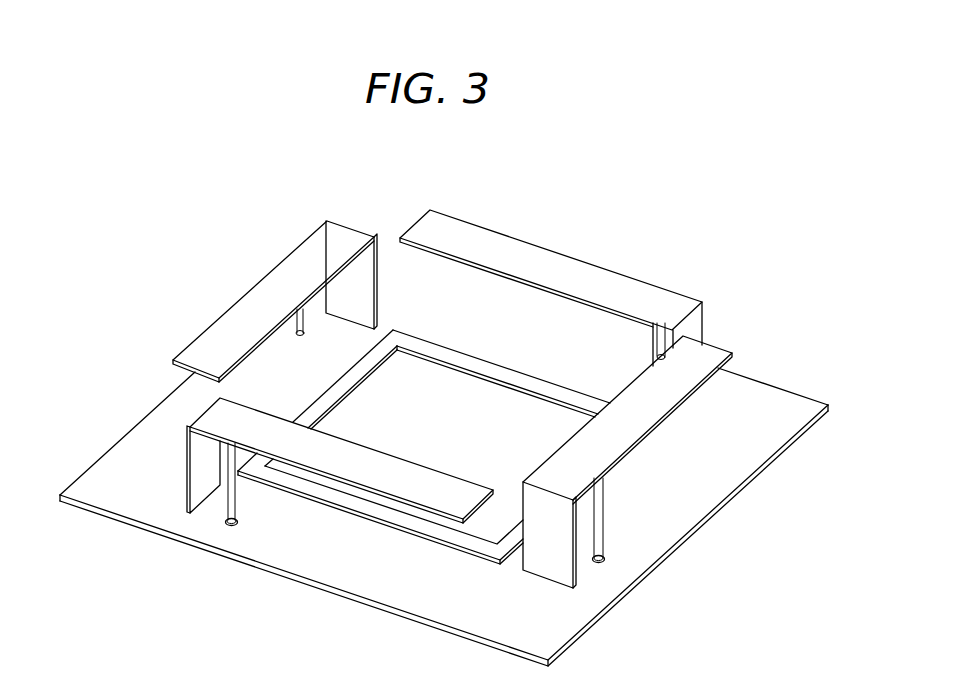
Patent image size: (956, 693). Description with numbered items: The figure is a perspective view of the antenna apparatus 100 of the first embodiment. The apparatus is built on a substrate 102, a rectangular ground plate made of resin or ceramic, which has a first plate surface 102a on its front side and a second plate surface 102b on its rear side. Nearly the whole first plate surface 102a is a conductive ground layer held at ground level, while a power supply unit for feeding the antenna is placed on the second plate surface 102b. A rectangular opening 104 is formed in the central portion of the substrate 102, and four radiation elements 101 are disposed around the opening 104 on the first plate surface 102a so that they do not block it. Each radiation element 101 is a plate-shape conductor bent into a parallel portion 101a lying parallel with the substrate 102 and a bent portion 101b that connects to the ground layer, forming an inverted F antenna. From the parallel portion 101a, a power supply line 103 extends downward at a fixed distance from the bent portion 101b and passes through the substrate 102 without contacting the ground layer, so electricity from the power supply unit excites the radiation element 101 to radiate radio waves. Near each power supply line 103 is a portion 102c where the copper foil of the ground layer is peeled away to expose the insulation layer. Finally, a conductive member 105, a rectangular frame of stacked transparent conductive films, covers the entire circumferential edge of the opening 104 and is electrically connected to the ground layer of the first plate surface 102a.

The antenna apparatus 100 is at (170, 202).
The radiation element 101 is at (187, 293).
The parallel portion 101a is at (300, 247).
The bent portion 101b is at (374, 262).
The substrate 102 is at (810, 399).
The first plate surface 102a is at (343, 570).
The second plate surface 102b is at (377, 613).
The portion 102c is at (228, 530).
The power supply line 103 is at (294, 308).
The opening 104 is at (465, 398).
The conductive member 105 is at (492, 556).